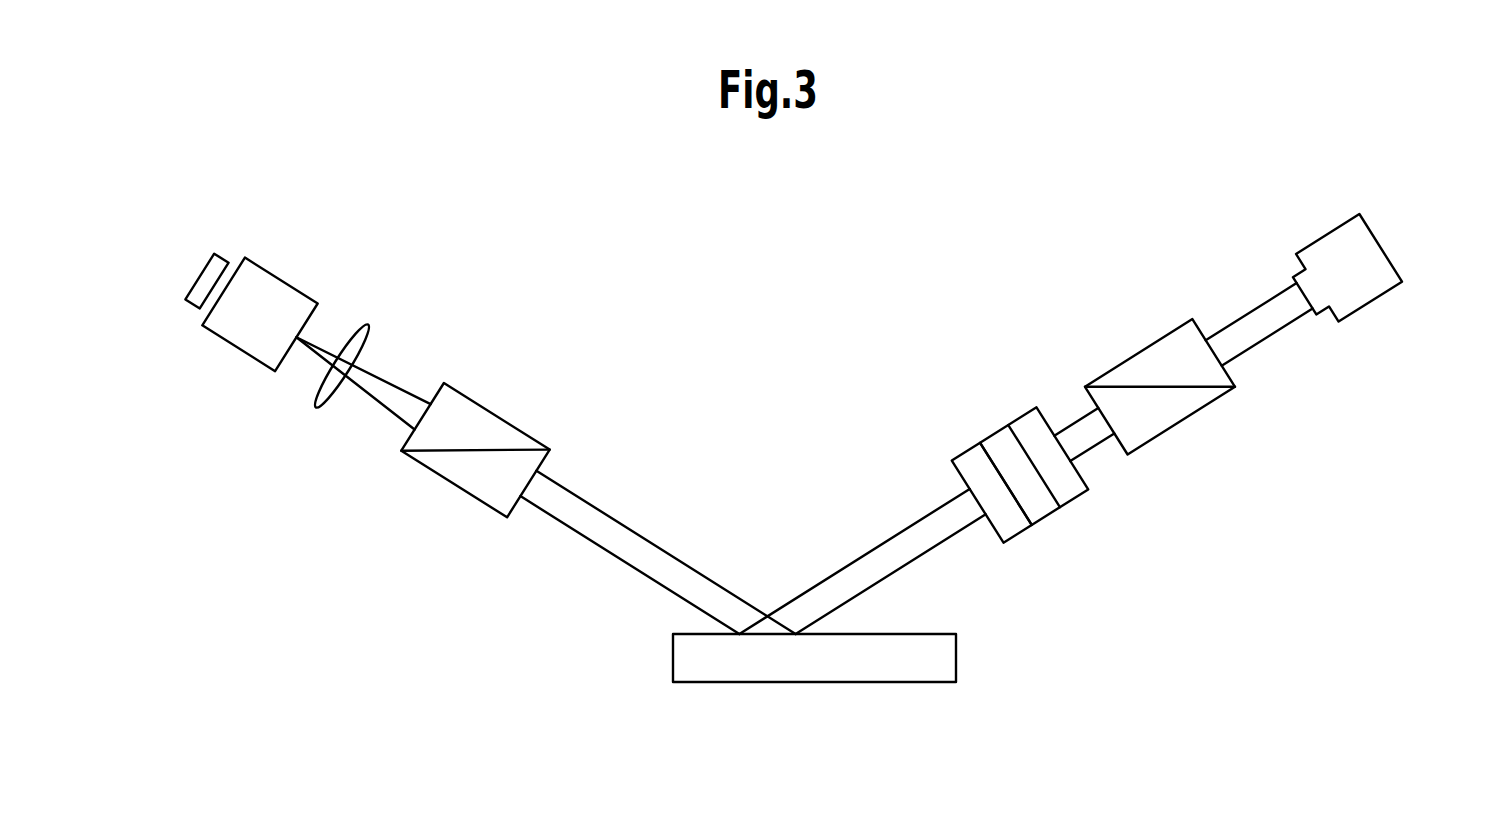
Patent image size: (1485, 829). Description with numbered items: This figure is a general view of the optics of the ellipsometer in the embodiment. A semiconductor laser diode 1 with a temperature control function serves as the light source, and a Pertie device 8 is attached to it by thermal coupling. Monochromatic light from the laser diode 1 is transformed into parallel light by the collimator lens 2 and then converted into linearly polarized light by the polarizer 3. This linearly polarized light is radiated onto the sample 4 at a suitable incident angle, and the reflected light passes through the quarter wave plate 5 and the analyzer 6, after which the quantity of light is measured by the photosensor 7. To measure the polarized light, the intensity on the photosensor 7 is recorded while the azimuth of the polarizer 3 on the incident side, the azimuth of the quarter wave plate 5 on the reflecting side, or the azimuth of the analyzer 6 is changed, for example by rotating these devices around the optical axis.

The semiconductor laser diode 1 is at (297, 285).
The collimator lens 2 is at (305, 412).
The polarizer 3 is at (468, 495).
The sample 4 is at (960, 660).
The quarter wave plate 5 is at (993, 428).
The analyzer 6 is at (1070, 507).
The photosensor 7 is at (1368, 310).
The Pertie device 8 is at (210, 258).